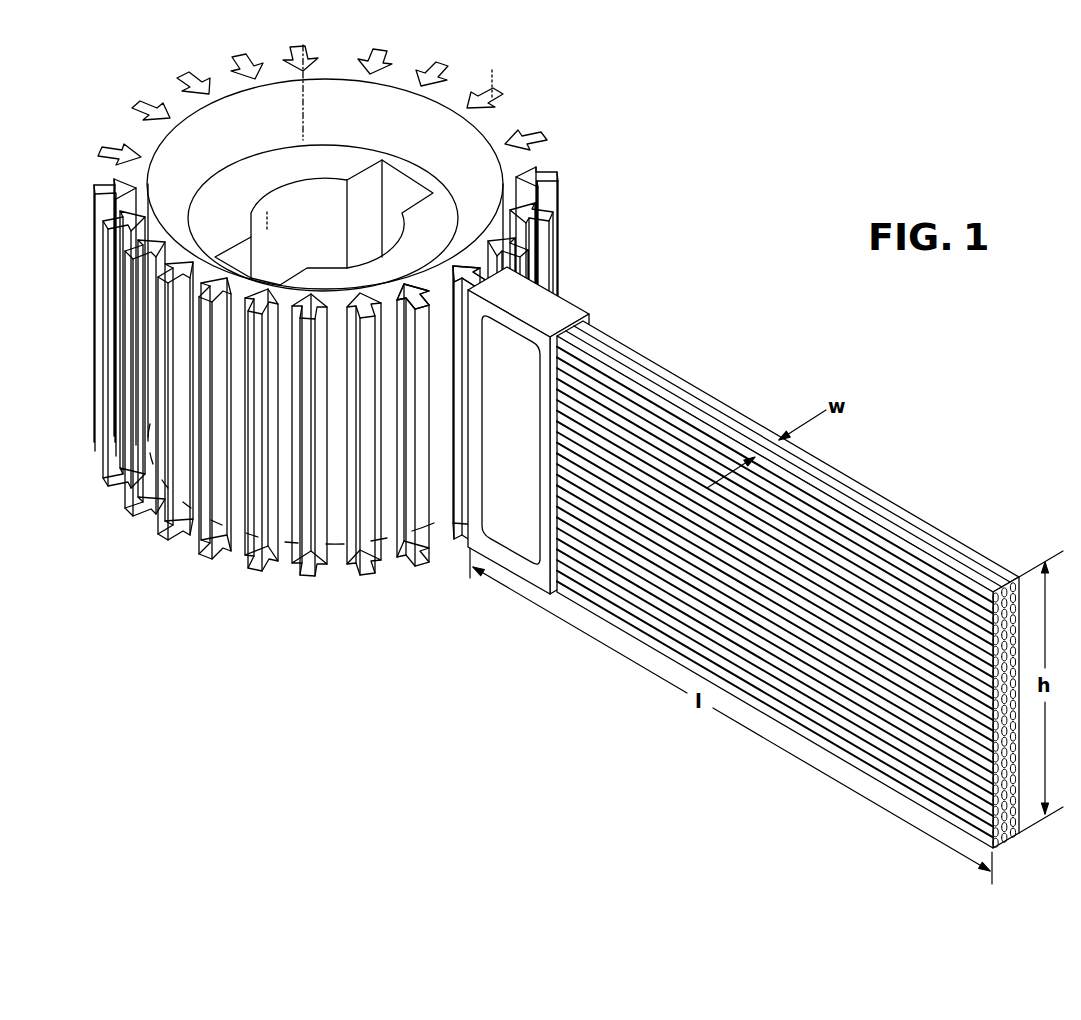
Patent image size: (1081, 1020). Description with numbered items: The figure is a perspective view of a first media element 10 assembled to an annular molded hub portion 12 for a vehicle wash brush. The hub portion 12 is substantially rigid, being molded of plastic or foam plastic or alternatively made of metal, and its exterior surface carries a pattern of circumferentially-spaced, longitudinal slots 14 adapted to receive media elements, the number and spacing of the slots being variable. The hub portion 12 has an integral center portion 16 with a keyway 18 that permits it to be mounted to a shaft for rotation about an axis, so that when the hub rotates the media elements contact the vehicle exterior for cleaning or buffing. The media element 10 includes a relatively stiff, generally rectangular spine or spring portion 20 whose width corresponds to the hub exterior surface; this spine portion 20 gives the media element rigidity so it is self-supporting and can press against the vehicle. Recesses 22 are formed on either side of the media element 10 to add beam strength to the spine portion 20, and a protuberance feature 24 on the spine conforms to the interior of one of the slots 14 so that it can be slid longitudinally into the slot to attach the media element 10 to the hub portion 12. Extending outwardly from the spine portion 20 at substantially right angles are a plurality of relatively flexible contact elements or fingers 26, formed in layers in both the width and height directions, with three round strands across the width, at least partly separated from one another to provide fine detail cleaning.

The media element 10 is at (788, 575).
The hub portion 12 is at (196, 74).
The slots 14 is at (310, 557).
The center portion 16 is at (280, 163).
The keyway 18 is at (403, 190).
The spine portion 20 is at (562, 313).
The recesses 22 is at (517, 356).
The protuberance feature 24 is at (450, 282).
The contact elements 26 is at (915, 522).